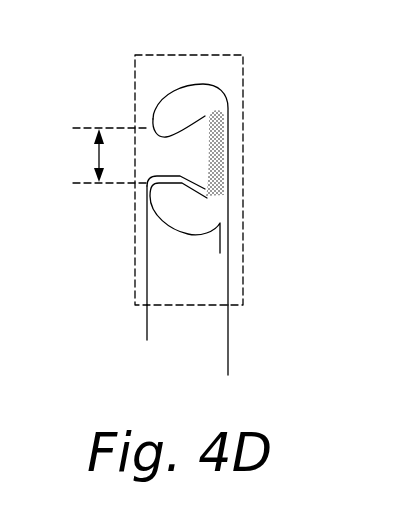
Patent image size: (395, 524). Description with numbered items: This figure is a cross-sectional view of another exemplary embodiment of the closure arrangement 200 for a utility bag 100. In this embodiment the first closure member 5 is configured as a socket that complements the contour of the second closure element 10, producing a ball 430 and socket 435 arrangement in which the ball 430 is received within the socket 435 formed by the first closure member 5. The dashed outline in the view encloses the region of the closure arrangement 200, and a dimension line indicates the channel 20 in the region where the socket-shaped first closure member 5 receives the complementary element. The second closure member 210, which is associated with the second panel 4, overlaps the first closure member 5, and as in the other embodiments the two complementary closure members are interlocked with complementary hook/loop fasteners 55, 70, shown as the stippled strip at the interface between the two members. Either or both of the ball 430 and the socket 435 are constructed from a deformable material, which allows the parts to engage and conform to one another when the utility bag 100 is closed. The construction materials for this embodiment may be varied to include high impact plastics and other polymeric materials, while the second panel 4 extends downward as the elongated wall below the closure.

The utility bag 100 is at (64, 98).
The first closure member 5 is at (153, 108).
The socket 435 is at (199, 113).
The ball 430 is at (185, 200).
The hook/loop fastener 55 is at (269, 153).
The hook/loop fastener 70 is at (220, 155).
The channel 20 is at (97, 158).
The second closure member 210 is at (215, 195).
The second closure element 10 is at (137, 283).
The closure arrangement 200 is at (180, 305).
The second panel 4 is at (228, 331).